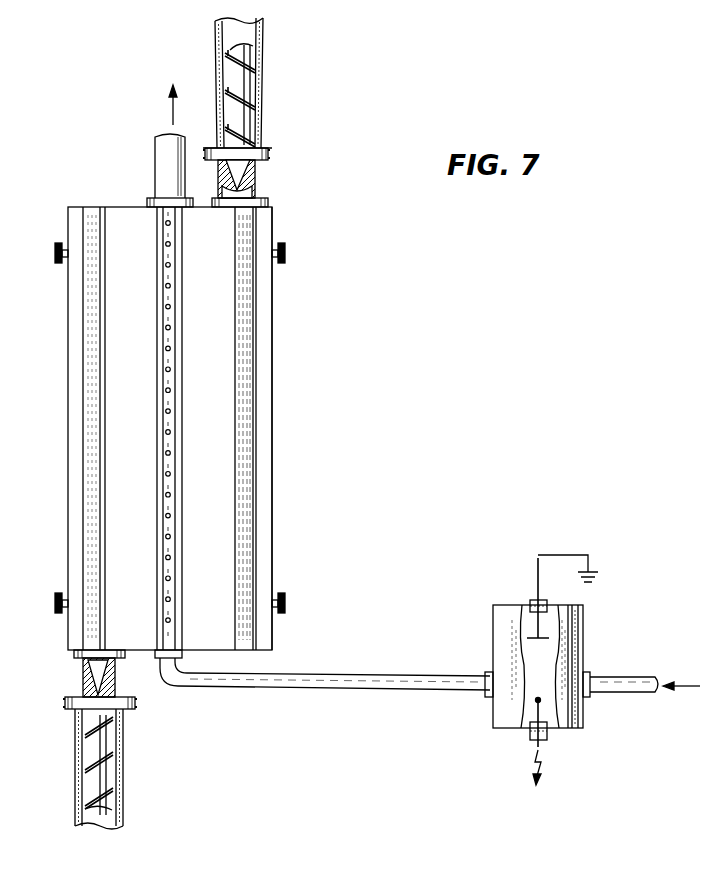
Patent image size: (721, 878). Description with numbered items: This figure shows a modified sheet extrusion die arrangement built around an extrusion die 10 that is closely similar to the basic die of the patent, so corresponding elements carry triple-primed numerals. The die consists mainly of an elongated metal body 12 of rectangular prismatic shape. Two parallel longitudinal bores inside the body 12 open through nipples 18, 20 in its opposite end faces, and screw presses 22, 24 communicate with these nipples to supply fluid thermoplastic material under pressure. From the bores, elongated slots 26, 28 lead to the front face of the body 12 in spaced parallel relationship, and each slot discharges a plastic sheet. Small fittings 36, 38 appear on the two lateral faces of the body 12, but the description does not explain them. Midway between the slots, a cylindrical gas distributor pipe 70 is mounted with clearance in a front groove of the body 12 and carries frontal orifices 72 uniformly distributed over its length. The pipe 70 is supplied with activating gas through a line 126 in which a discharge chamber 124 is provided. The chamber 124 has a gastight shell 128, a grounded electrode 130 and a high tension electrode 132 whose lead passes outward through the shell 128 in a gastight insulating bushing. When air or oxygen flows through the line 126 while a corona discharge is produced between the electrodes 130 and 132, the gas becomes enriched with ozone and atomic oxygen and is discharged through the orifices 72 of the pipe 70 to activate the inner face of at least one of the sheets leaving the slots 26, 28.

The extrusion die 10 is at (62, 426).
The body 12 is at (327, 435).
The nipple 18 is at (90, 679).
The nipple 20 is at (317, 178).
The screw press 22 is at (95, 779).
The screw press 24 is at (324, 72).
The elongated slot 26 is at (100, 335).
The elongated slot 28 is at (237, 344).
The left adjusting knob 36 is at (52, 260).
The right adjusting knob 38 is at (352, 274).
The gas distributor pipe 70 is at (227, 413).
The frontal orifices 72 is at (230, 460).
The discharge chamber 124 is at (663, 588).
The line 126 is at (352, 703).
The gastight shell 128 is at (652, 700).
The grounded electrode 130 is at (536, 576).
The high tension electrode 132 is at (535, 745).